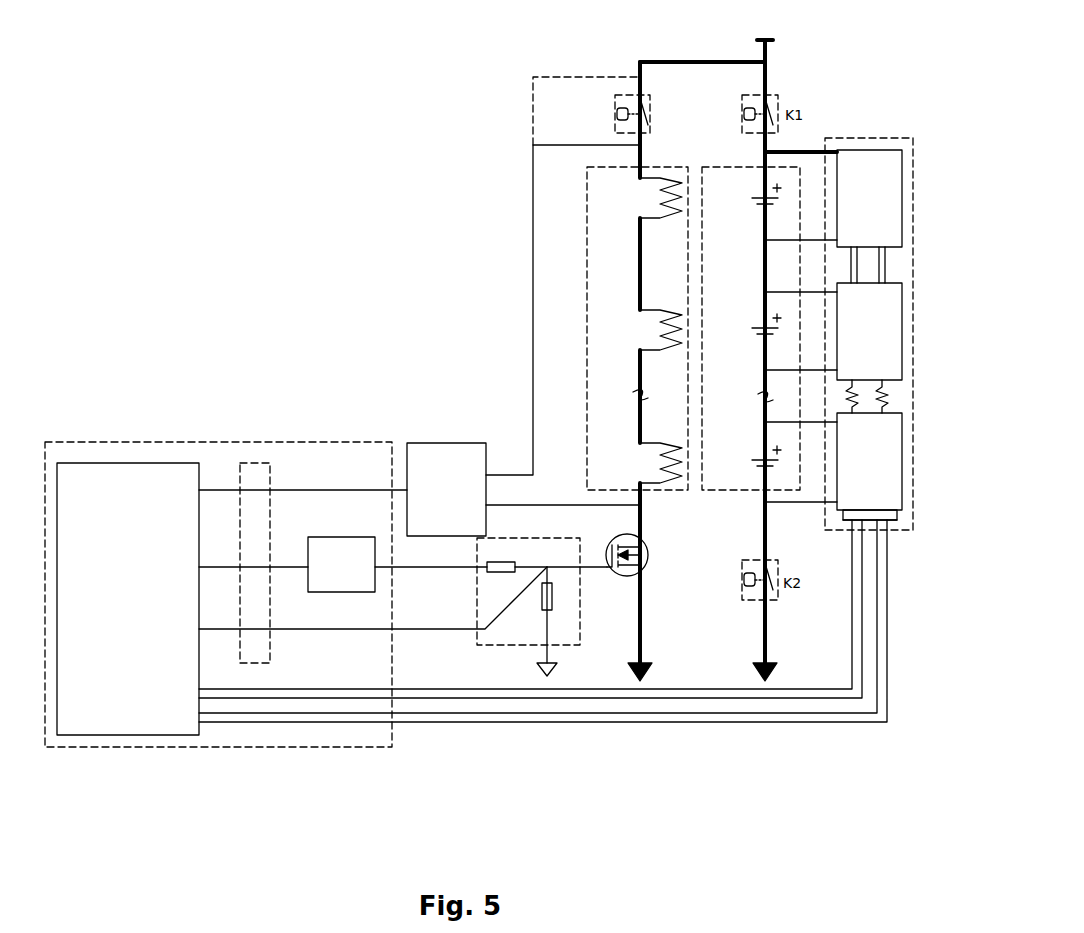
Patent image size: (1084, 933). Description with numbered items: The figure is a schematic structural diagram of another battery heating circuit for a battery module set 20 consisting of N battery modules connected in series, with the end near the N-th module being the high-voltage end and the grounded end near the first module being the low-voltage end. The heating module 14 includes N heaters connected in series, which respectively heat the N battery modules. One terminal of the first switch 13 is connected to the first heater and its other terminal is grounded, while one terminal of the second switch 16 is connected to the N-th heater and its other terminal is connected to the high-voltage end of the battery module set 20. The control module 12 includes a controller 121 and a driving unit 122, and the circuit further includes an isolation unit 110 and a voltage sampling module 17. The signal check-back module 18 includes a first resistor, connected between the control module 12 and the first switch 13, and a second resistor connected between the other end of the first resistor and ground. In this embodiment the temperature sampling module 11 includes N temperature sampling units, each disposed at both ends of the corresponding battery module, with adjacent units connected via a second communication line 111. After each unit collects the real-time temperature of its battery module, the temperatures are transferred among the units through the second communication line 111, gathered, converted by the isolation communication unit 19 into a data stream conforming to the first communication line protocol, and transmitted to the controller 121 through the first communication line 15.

The temperature sampling module 11 is at (891, 317).
The second communication line 111 is at (890, 270).
The control module 12 is at (220, 595).
The isolation unit 110 is at (242, 462).
The controller 121 is at (108, 740).
The driving unit 122 is at (320, 537).
The first switch 13 is at (646, 571).
The heating module 14 is at (588, 252).
The first communication line 15 is at (522, 712).
The second switch 16 is at (616, 114).
The voltage sampling module 17 is at (447, 443).
The signal check-back module 18 is at (482, 642).
The isolation communication unit 19 is at (893, 530).
The battery module set 20 is at (706, 492).